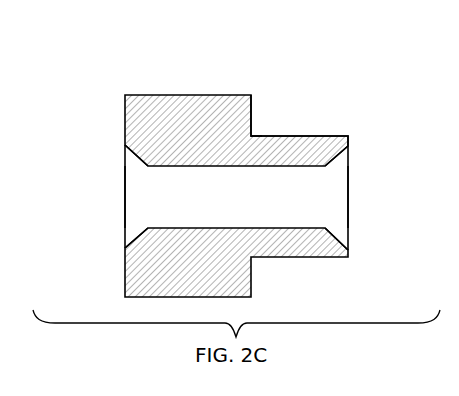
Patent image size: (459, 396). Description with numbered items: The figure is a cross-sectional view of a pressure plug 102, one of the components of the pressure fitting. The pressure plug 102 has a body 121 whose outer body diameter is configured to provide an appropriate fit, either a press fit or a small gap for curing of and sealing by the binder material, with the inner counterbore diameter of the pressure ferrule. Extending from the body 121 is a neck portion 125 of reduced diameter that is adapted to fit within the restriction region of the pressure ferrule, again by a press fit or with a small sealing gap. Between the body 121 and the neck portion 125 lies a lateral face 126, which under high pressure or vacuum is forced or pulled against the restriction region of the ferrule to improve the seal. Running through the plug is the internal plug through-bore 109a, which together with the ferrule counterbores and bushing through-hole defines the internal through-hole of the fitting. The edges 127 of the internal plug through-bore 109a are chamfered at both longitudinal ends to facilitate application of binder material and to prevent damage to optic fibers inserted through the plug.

The pressure plug 102 is at (237, 164).
The body 121 is at (163, 93).
The internal plug through-bore 109a is at (236, 197).
The neck portion 125 is at (325, 133).
The lateral face 126 is at (255, 110).
The edges 127 is at (119, 151).